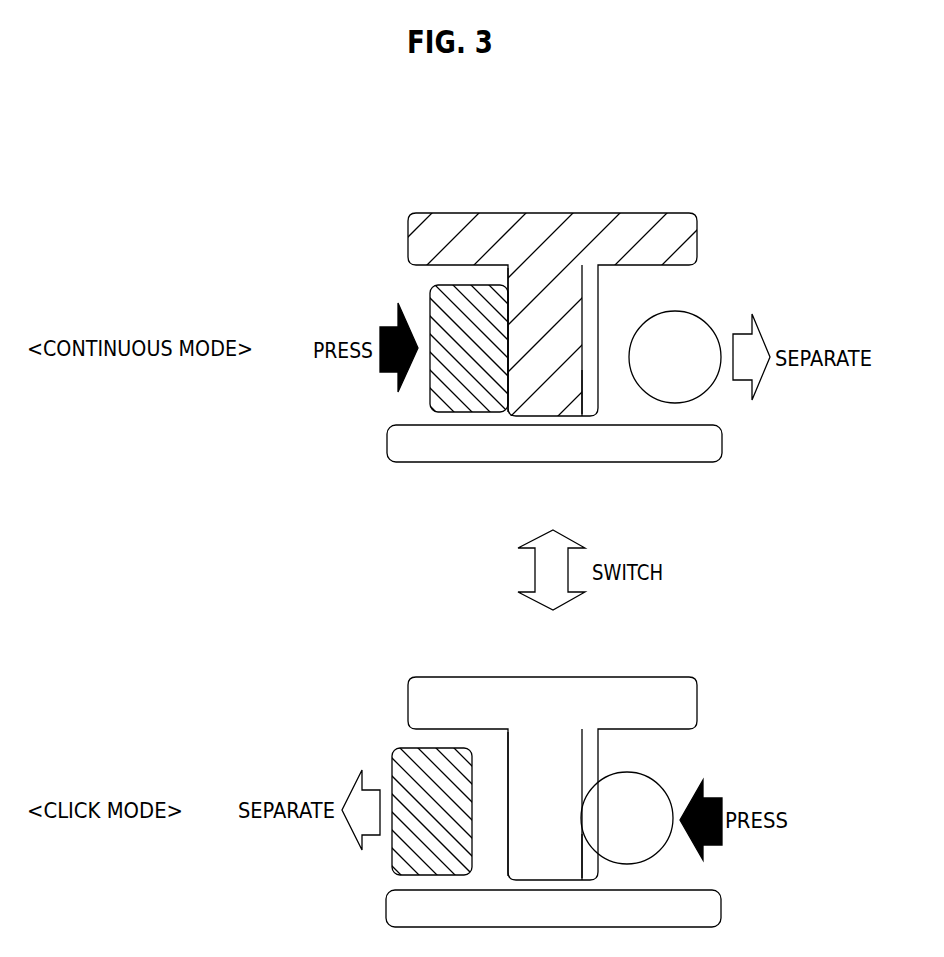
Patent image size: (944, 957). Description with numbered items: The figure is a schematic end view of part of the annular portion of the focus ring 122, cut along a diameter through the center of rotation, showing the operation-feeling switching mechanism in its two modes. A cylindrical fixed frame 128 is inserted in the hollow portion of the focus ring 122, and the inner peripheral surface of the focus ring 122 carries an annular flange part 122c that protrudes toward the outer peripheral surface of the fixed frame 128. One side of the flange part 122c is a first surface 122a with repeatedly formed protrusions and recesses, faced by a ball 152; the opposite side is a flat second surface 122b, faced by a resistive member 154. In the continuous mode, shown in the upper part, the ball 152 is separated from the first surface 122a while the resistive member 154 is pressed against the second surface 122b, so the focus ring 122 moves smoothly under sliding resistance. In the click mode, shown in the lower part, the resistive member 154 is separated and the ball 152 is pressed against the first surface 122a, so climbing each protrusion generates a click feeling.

The focus ring 122 is at (697, 239).
The first surface 122a is at (584, 286).
The second surface 122b is at (507, 269).
The flange part 122c is at (567, 375).
The fixed frame 128 is at (722, 443).
The ball 152 is at (693, 312).
The resistive member 154 is at (430, 403).